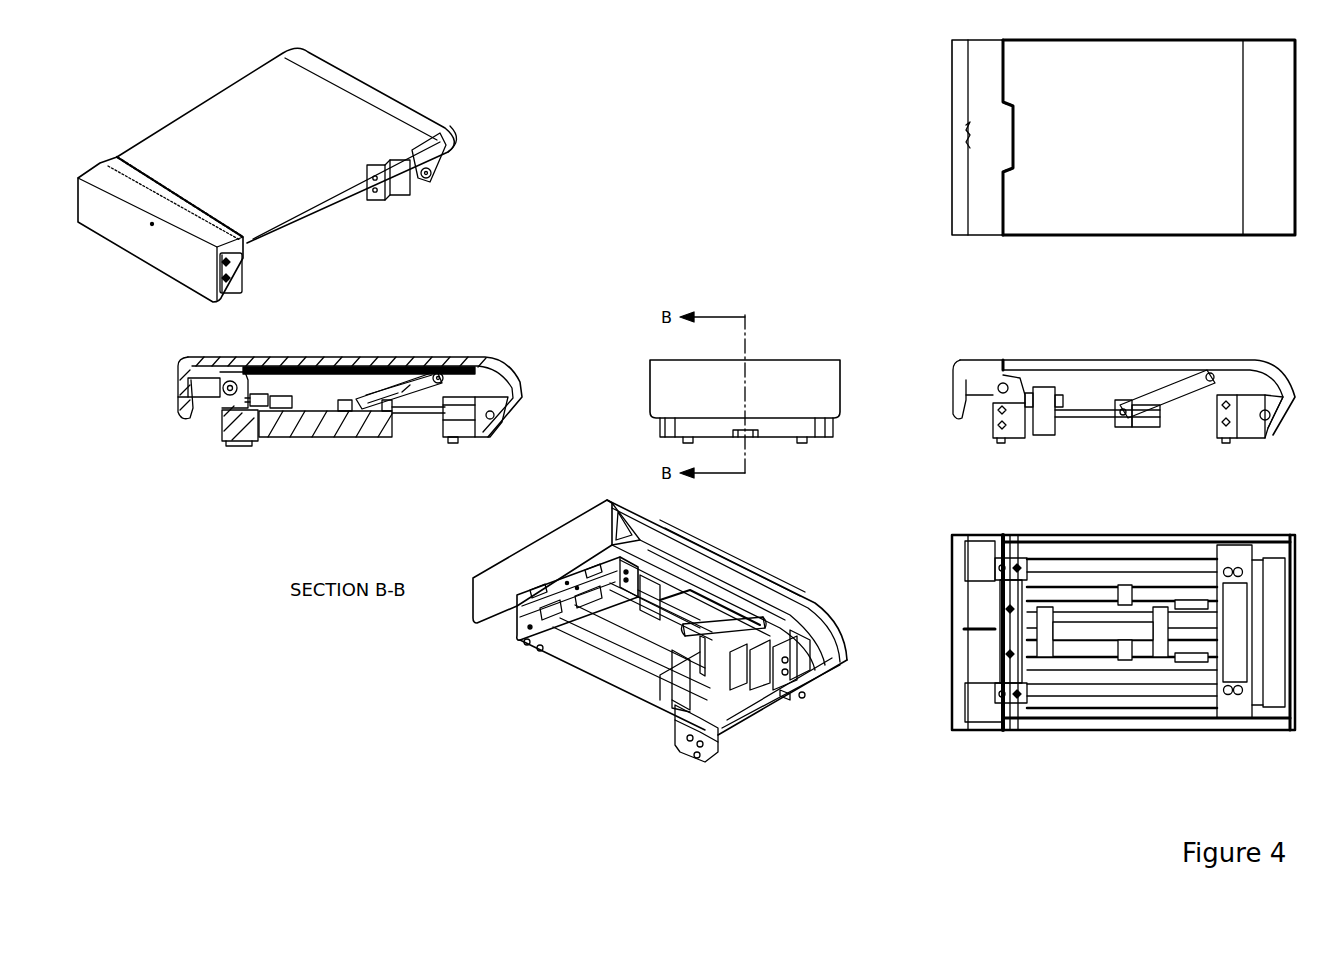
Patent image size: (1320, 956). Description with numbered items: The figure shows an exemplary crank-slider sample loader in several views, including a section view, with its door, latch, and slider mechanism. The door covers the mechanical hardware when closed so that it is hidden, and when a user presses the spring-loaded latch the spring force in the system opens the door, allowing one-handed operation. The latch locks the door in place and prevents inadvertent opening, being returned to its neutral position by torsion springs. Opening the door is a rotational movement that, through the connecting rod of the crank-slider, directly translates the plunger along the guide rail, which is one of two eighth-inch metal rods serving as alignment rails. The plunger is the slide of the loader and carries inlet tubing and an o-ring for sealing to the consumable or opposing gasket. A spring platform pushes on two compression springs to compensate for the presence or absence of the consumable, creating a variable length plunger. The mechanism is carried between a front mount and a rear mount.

The element door is at (334, 135).
The element latch is at (152, 248).
The element spring platform is at (356, 403).
The element connecting rod is at (411, 383).
The element plunger is at (350, 426).
The element guide rail is at (760, 592).
The element front mount is at (530, 627).
The element rear mount is at (712, 745).